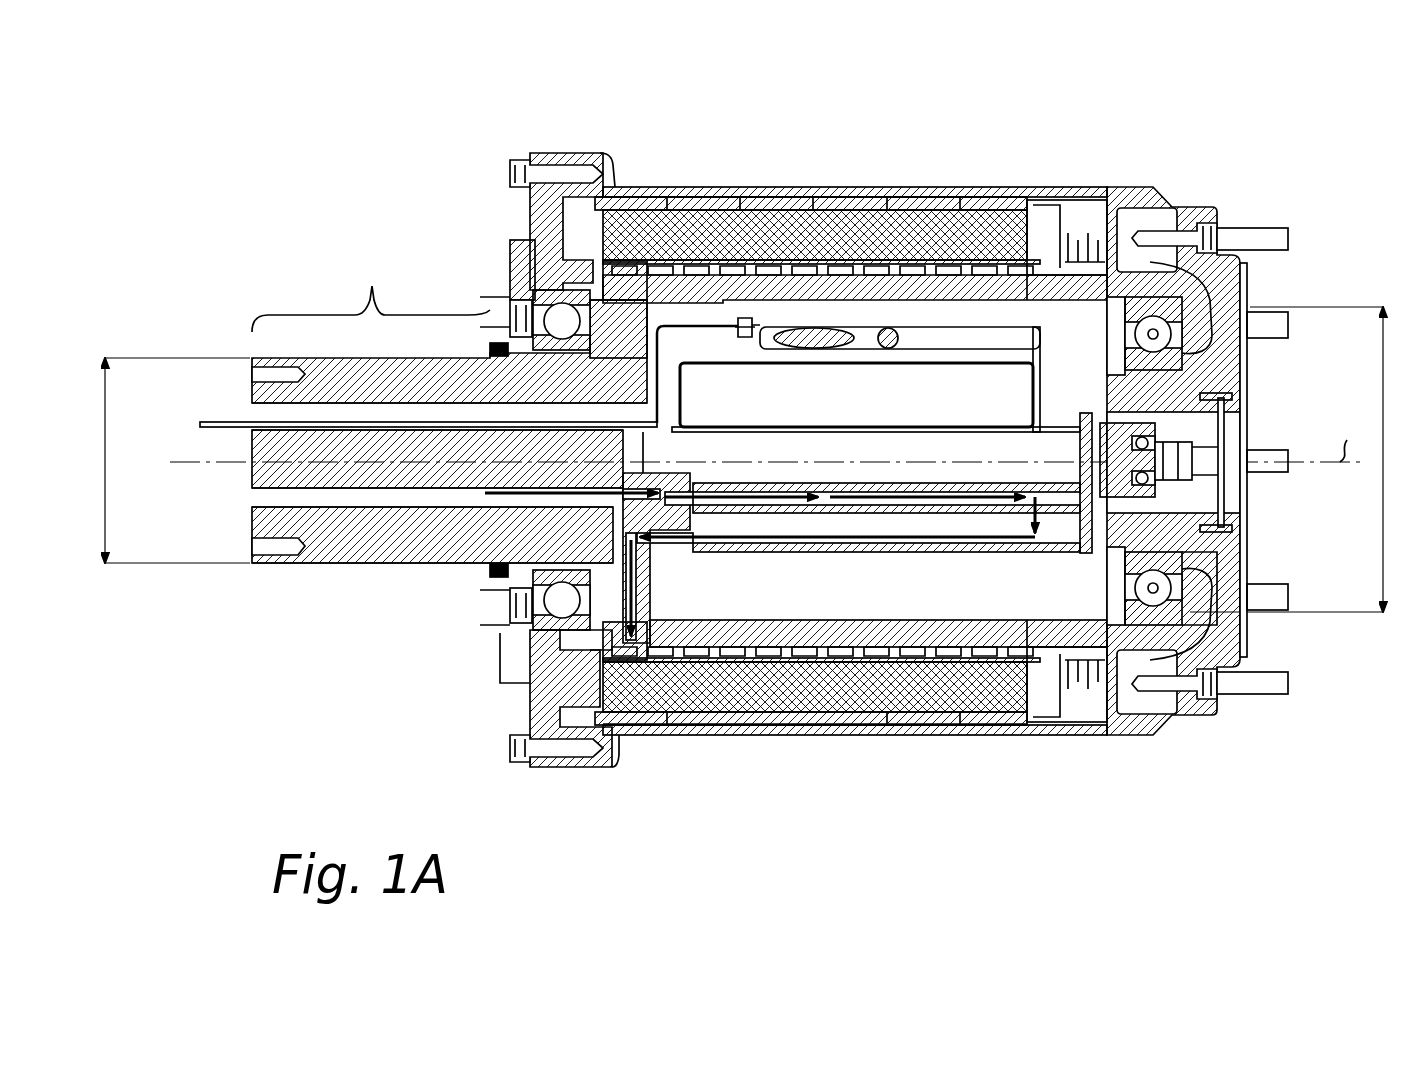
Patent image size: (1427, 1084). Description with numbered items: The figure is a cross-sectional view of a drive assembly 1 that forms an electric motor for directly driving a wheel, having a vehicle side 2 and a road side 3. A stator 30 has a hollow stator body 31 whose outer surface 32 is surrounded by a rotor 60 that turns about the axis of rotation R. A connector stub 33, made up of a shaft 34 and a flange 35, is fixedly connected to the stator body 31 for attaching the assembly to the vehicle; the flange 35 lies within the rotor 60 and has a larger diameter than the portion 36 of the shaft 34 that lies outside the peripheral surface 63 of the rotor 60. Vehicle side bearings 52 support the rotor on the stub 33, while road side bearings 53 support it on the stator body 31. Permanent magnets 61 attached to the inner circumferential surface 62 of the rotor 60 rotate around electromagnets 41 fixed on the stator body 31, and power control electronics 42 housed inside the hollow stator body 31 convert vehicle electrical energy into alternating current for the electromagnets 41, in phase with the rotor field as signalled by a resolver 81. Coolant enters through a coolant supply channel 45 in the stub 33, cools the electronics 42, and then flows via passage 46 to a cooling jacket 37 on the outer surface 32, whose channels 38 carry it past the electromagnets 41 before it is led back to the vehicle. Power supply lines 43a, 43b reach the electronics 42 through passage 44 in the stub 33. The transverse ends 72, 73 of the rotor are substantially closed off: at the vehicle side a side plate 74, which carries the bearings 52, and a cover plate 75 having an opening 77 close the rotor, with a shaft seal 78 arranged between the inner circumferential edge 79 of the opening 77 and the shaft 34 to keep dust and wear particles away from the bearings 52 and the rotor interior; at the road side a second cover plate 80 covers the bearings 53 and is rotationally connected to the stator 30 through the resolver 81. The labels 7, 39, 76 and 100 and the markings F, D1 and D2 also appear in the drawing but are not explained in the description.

The drive assembly 1 is at (297, 275).
The vehicle side 2 is at (220, 410).
The road side 3 is at (1258, 408).
The bearing housing 7 is at (1190, 595).
The stator 30 is at (612, 620).
The hollow stator body 31 is at (1020, 632).
The outer surface 32 is at (890, 650).
The connector stub 33 is at (340, 580).
The shaft 34 is at (320, 565).
The flange 35 is at (632, 342).
The portion of the shaft 36 is at (371, 294).
The cooling jacket 37 is at (877, 262).
The channels 38 is at (735, 650).
The cooling channel 39 is at (850, 612).
The electromagnets 41 is at (920, 225).
The power control electronics 42 is at (718, 380).
The power supply line 43a is at (243, 416).
The power supply line 43b is at (965, 380).
The passage 44 is at (325, 412).
The coolant supply channel 45 is at (262, 500).
The passage 46 is at (655, 620).
The vehicle side bearings 52 is at (558, 320).
The road side bearings 53 is at (1153, 334).
The rotor 60 is at (1180, 185).
The permanent magnets 61 is at (710, 200).
The inner circumferential surface 62 is at (745, 195).
The peripheral surface 63 is at (790, 185).
The transverse end 72 is at (487, 258).
The transverse end 73 is at (1228, 222).
The side plate 74 is at (545, 212).
The cover plate 75 is at (548, 716).
The bearing cover 76 is at (550, 636).
The opening 77 is at (500, 622).
The shaft seal 78 is at (490, 573).
The inner circumferential edge 79 is at (498, 588).
The second cover plate 80 is at (1247, 632).
The resolver 81 is at (1220, 478).
The sensor assembly 100 is at (1050, 238).
The flow direction F is at (1020, 597).
The axis of rotation R is at (1347, 437).
The shaft diameter D1 is at (159, 460).
The rear plate diameter D2 is at (1305, 459).